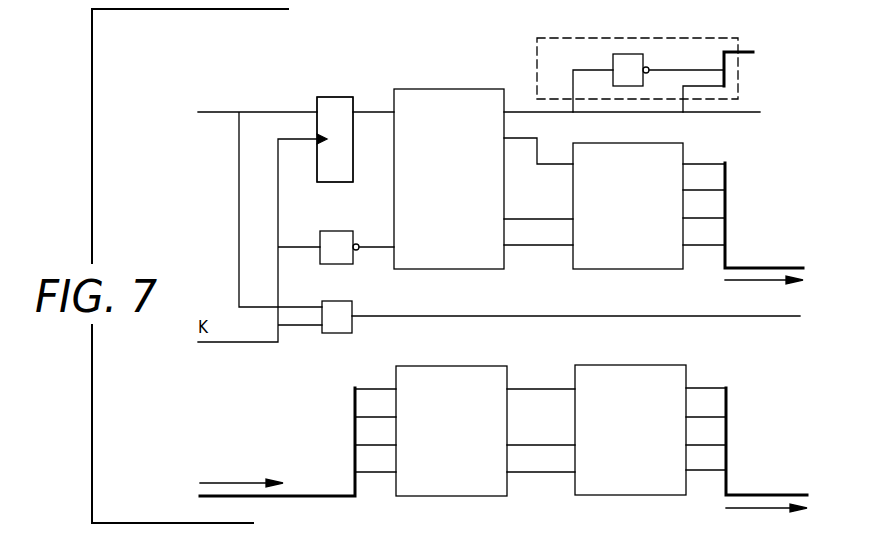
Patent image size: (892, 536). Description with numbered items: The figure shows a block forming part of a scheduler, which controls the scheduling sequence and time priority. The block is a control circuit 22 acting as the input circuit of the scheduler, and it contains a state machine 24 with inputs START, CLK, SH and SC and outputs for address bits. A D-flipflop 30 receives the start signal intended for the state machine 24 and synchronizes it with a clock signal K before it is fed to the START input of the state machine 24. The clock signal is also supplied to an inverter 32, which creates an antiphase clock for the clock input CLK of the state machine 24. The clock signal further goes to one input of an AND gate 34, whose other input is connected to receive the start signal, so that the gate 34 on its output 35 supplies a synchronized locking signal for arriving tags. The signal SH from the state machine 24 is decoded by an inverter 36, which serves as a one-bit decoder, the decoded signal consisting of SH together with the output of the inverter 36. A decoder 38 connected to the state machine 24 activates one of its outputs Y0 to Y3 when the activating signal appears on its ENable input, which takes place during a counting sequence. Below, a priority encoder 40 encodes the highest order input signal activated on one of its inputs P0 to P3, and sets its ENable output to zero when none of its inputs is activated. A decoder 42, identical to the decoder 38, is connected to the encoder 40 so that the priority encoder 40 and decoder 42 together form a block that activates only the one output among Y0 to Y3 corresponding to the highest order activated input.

The control circuit 22 is at (333, 82).
The state machine 24 is at (447, 88).
The D-flipflop 30 is at (335, 183).
The inverter 32 is at (336, 265).
The AND gate 34 is at (334, 334).
The output 35 is at (540, 318).
The inverter 36 is at (628, 54).
The decoder 38 is at (630, 270).
The priority encoder 40 is at (450, 365).
The decoder 42 is at (630, 364).